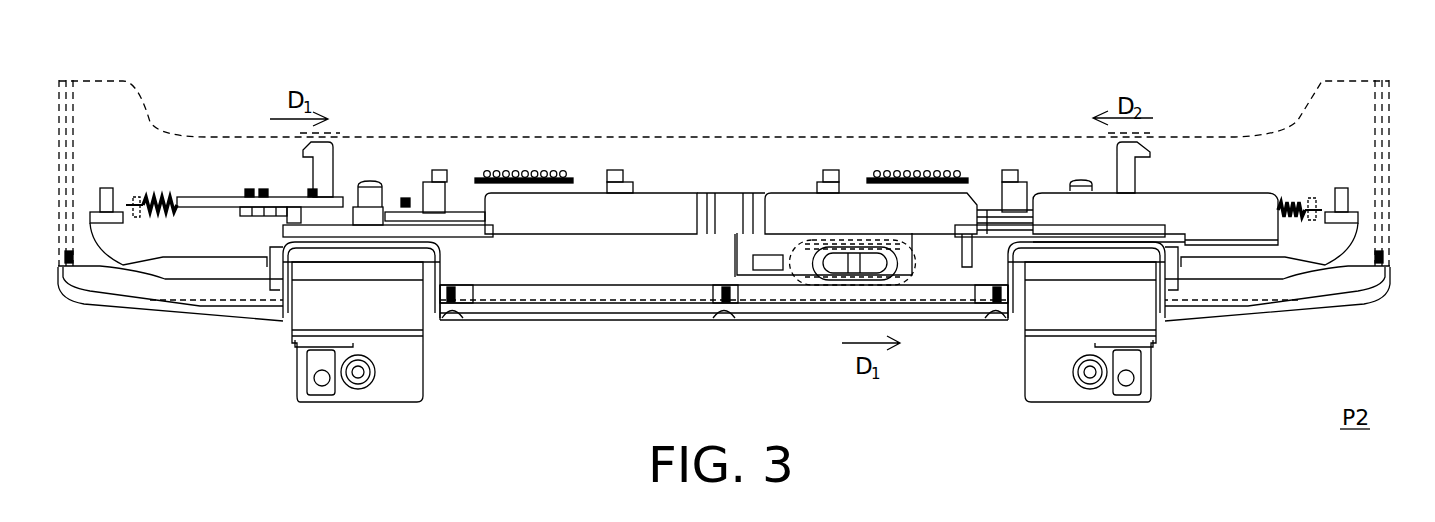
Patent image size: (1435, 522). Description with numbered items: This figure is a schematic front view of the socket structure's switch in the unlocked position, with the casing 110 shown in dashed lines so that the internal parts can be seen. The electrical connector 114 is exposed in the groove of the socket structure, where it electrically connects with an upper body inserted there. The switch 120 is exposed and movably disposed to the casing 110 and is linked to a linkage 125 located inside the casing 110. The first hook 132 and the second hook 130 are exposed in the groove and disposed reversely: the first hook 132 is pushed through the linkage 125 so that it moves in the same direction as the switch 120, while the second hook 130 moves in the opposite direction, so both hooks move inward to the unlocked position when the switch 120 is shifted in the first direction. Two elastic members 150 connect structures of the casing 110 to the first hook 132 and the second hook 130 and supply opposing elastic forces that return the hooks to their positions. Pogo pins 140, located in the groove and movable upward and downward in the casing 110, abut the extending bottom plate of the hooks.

The casing 110 is at (1392, 118).
The electrical connector 114 is at (520, 170).
The switch 120 is at (821, 283).
The linkage 125 is at (674, 275).
The second hook 130 is at (1145, 150).
The first hook 132 is at (323, 151).
The pogo pins 140 is at (370, 180).
The elastic members 150 is at (152, 197).